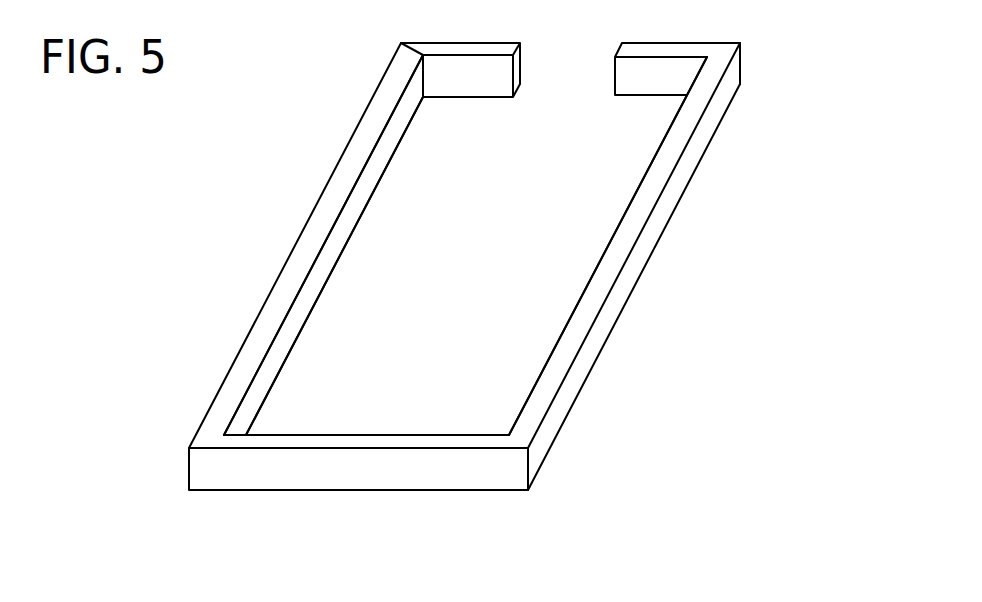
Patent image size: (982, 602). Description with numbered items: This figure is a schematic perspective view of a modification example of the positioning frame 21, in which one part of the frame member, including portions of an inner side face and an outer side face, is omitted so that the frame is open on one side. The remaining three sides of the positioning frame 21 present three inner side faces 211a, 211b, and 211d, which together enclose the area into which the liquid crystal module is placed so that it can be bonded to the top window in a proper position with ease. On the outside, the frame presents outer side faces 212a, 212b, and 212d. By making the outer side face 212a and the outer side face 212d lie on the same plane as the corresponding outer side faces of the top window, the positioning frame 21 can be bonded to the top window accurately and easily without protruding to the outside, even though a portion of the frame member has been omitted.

The positioning frame 21 is at (438, 310).
The inner side face 211a is at (387, 408).
The inner side face 211b is at (383, 223).
The inner side face 211d is at (591, 228).
The outer side face 212a is at (358, 469).
The outer side face 212b is at (320, 245).
The outer side face 212d is at (624, 266).